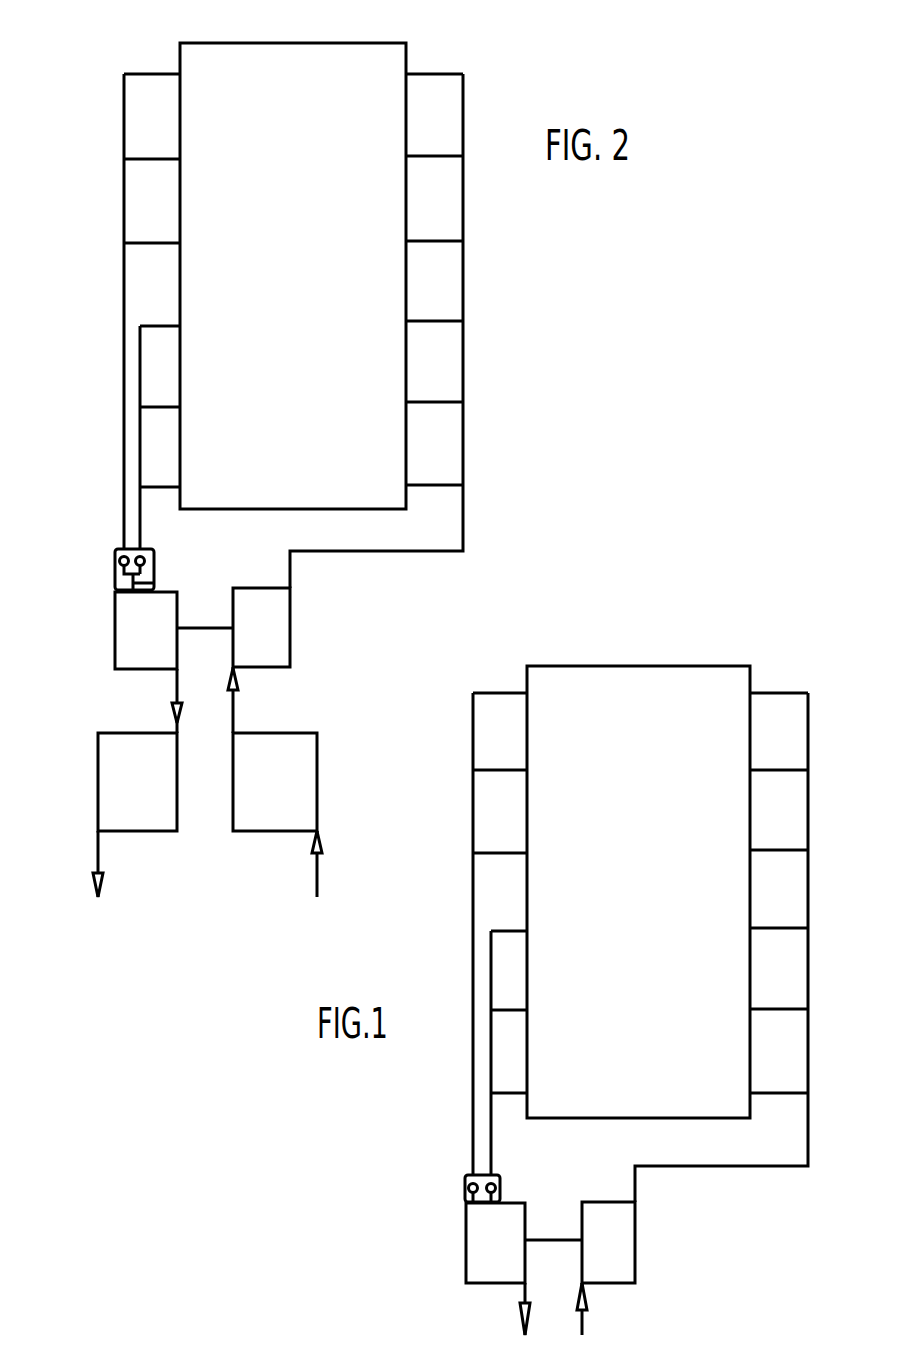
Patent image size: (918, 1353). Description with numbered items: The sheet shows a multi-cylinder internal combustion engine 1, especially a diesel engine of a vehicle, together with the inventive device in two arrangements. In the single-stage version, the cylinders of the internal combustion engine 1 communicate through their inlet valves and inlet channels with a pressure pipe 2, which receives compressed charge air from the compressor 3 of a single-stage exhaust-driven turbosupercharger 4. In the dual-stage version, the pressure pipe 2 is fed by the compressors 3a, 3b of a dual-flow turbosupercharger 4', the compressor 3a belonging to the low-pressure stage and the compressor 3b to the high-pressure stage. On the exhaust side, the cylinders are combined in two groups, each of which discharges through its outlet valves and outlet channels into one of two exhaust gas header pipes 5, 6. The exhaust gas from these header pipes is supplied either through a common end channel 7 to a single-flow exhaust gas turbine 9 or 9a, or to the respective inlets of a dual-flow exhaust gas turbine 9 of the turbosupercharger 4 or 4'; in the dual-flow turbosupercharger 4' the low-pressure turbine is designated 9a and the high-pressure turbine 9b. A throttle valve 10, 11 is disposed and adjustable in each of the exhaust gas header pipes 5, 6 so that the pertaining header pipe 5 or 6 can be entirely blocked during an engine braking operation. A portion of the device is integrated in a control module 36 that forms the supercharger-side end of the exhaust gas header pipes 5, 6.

In FIG. 2, the multi-cylinder internal combustion engine 1 is at (250, 55).
In FIG. 1, the multi-cylinder internal combustion engine 1 is at (645, 683).
In FIG. 2, the pressure pipe 2 is at (400, 553).
In FIG. 1, the pressure pipe 2 is at (716, 1168).
In FIG. 1, the compressor 3 is at (625, 1250).
In FIG. 2, the low-pressure stage compressor 3a is at (302, 783).
In FIG. 2, the high-pressure stage compressor 3b is at (282, 641).
In FIG. 1, the single-stage turbosupercharger 4 is at (553, 1202).
In FIG. 2, the dual-flow turbosupercharger 4' is at (111, 701).
In FIG. 2, the exhaust gas header pipe 5 is at (123, 521).
In FIG. 1, the exhaust gas header pipe 5 is at (472, 1133).
In FIG. 2, the exhaust gas header pipe 6 is at (141, 530).
In FIG. 1, the exhaust gas header pipe 6 is at (492, 1146).
In FIG. 2, the common end channel 7 is at (154, 583).
In FIG. 1, the exhaust gas turbine 9 is at (477, 1255).
In FIG. 2, the low-pressure stage exhaust gas turbine 9a is at (120, 778).
In FIG. 2, the high-pressure stage exhaust gas turbine 9b is at (128, 632).
In FIG. 2, the throttle valve 10 is at (120, 558).
In FIG. 1, the throttle valve 10 is at (467, 1189).
In FIG. 2, the throttle valve 11 is at (145, 560).
In FIG. 1, the throttle valve 11 is at (494, 1187).
In FIG. 2, the control module 36 is at (100, 580).
In FIG. 1, the control module 36 is at (442, 1177).